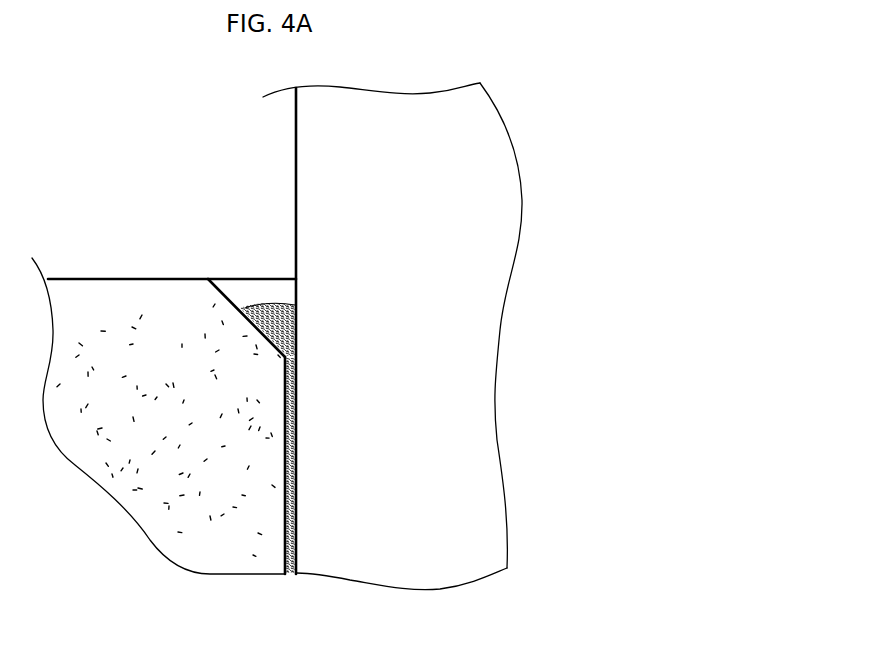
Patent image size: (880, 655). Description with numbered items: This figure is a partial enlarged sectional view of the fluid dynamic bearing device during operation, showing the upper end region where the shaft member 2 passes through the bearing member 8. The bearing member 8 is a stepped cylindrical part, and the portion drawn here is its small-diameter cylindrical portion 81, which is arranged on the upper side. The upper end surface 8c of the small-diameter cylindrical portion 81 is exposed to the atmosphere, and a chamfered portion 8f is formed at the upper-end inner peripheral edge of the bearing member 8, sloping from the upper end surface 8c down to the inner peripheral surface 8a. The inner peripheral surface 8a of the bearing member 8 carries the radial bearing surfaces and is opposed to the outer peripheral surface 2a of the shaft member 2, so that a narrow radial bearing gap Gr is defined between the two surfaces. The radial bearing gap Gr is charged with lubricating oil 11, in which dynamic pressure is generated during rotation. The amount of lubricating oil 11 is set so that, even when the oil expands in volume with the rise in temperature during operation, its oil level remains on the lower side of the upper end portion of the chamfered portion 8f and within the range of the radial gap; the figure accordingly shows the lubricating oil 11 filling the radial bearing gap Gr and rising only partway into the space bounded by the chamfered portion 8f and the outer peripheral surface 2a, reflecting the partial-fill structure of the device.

The shaft member 2 is at (388, 336).
The outer peripheral surface of the shaft member 2a is at (295, 165).
The bearing member 8 is at (169, 429).
The inner peripheral surface of the bearing member 8a is at (297, 549).
The upper end surface of the bearing member 8c is at (120, 278).
The chamfered portion 8f is at (237, 298).
The small-diameter cylindrical portion 81 is at (113, 445).
The lubricating oil 11 is at (297, 428).
The radial bearing gap Gr is at (297, 524).